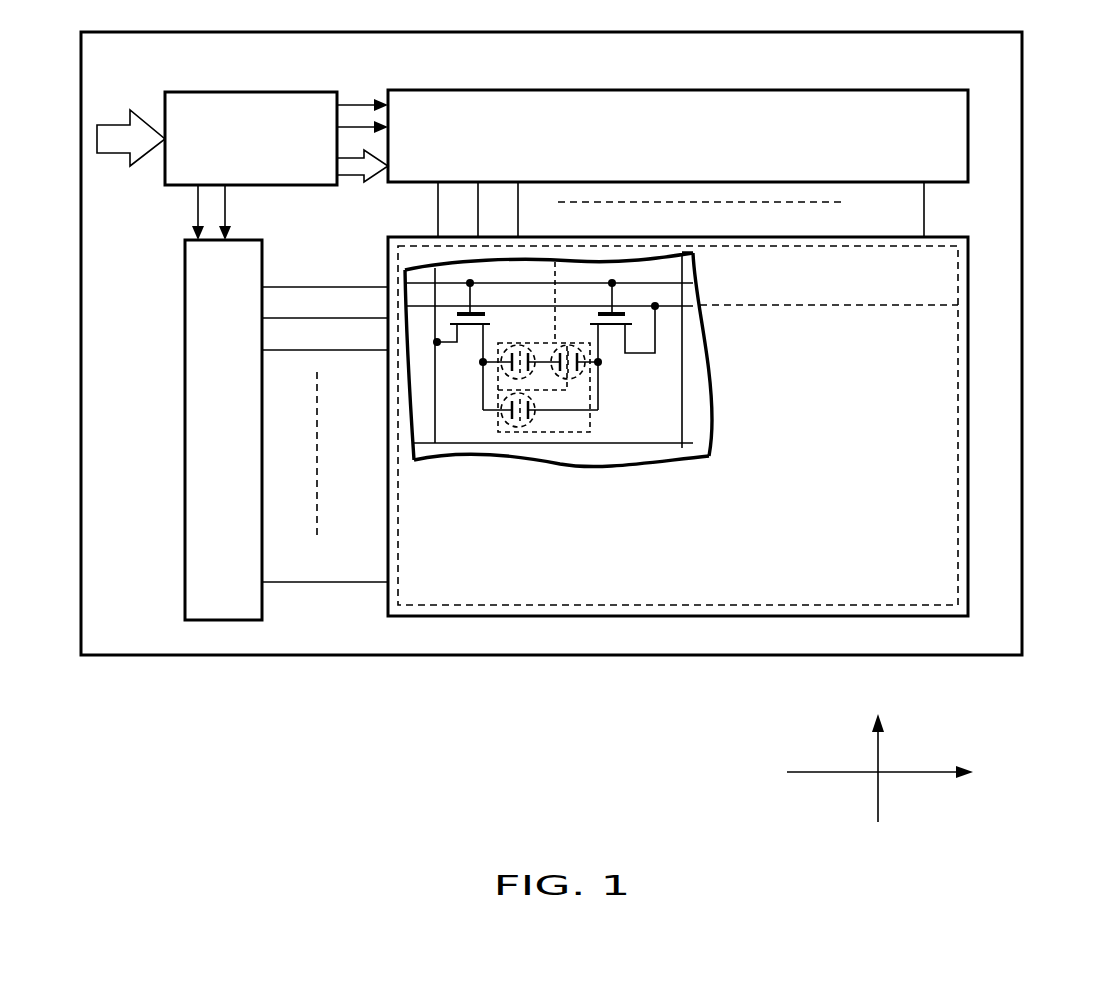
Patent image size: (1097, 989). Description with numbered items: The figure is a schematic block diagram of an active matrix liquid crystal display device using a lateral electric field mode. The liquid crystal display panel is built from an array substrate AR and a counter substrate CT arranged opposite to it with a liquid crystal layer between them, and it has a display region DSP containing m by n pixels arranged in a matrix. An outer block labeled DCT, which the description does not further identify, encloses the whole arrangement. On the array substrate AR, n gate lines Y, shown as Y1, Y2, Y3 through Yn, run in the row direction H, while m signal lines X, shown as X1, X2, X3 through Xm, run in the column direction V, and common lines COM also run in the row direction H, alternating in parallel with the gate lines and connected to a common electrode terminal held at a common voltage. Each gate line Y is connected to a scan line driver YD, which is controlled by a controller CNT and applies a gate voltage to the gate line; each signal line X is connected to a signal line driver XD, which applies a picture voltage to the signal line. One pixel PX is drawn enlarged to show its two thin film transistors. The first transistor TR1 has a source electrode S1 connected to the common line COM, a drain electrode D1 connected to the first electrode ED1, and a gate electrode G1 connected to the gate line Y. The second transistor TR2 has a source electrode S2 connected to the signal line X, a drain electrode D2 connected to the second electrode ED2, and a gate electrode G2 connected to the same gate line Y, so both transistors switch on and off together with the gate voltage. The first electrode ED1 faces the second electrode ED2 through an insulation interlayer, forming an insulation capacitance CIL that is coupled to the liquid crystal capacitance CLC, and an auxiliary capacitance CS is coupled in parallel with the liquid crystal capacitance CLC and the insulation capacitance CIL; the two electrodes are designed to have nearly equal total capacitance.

The controller CNT is at (250, 113).
The signal line driver XD is at (912, 110).
The scan line driver YD is at (185, 447).
The display region DSP is at (740, 608).
The counter substrate CT is at (968, 375).
The array substrate AR is at (975, 635).
The display control circuit DCT is at (350, 635).
The signal line X1 is at (425, 209).
The signal line X2 is at (462, 209).
The signal line X3 is at (502, 209).
The signal line Xm is at (906, 209).
The gate line Y1 is at (325, 276).
The gate line Y2 is at (325, 308).
The gate line Y3 is at (325, 339).
The gate line Yn is at (325, 569).
The signal line X is at (437, 425).
The gate line Y is at (672, 283).
The common line COM is at (662, 305).
The pixel PX is at (480, 432).
The first transistor TR1 is at (668, 319).
The second transistor TR2 is at (411, 354).
The gate electrode G1 is at (613, 300).
The gate electrode G2 is at (468, 299).
The source electrode S1 is at (640, 346).
The source electrode S2 is at (437, 344).
The drain electrode D1 is at (598, 397).
The drain electrode D2 is at (483, 385).
The first electrode ED1 is at (590, 433).
The second electrode ED2 is at (503, 437).
The auxiliary capacitance CS is at (560, 433).
The liquid crystal capacitance CLC is at (528, 345).
The insulation capacitance CIL is at (556, 262).
The column direction V is at (878, 753).
The row direction H is at (892, 773).